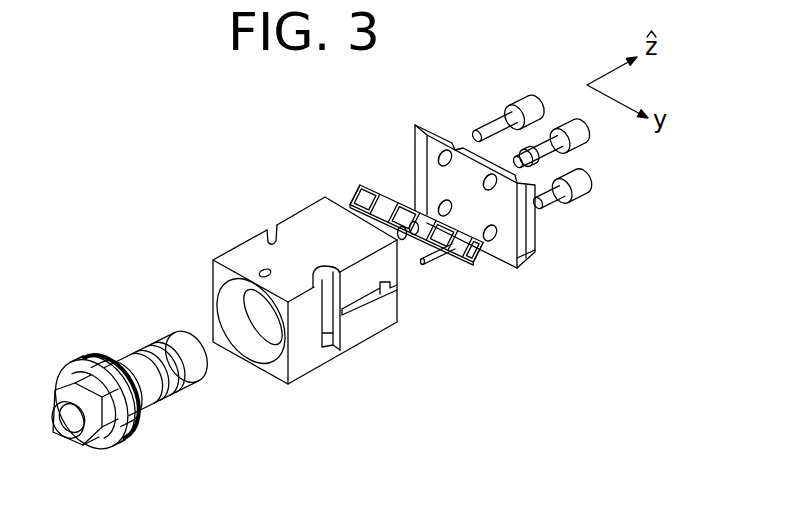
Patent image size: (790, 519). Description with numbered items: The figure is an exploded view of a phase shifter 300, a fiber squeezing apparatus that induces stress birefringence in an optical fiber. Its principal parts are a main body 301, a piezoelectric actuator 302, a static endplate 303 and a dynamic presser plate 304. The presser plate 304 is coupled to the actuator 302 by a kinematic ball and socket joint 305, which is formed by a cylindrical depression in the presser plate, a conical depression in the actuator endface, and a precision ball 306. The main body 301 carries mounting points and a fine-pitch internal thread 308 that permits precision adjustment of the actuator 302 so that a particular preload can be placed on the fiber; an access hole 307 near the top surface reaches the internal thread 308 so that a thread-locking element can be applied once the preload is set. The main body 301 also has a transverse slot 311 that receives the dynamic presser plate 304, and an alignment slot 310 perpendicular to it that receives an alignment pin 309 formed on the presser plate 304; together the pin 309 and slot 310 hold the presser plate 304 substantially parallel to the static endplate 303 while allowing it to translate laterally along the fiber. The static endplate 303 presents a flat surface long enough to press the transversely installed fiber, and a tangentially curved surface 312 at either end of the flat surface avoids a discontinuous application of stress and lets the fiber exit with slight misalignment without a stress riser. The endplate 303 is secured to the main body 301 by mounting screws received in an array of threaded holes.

The phase shifter 300 is at (508, 71).
The main body 301 is at (312, 284).
The piezoelectric actuator 302 is at (126, 339).
The static endplate 303 is at (522, 193).
The dynamic presser plate 304 is at (478, 255).
The ball and socket joint 305 is at (412, 255).
The precision ball 306 is at (427, 242).
The access hole 307 is at (266, 238).
The internal thread 308 is at (272, 345).
The alignment pin 309 is at (450, 258).
The alignment slot 310 is at (340, 303).
The transverse slot 311 is at (397, 285).
The tangentially curved surface 312 is at (522, 266).